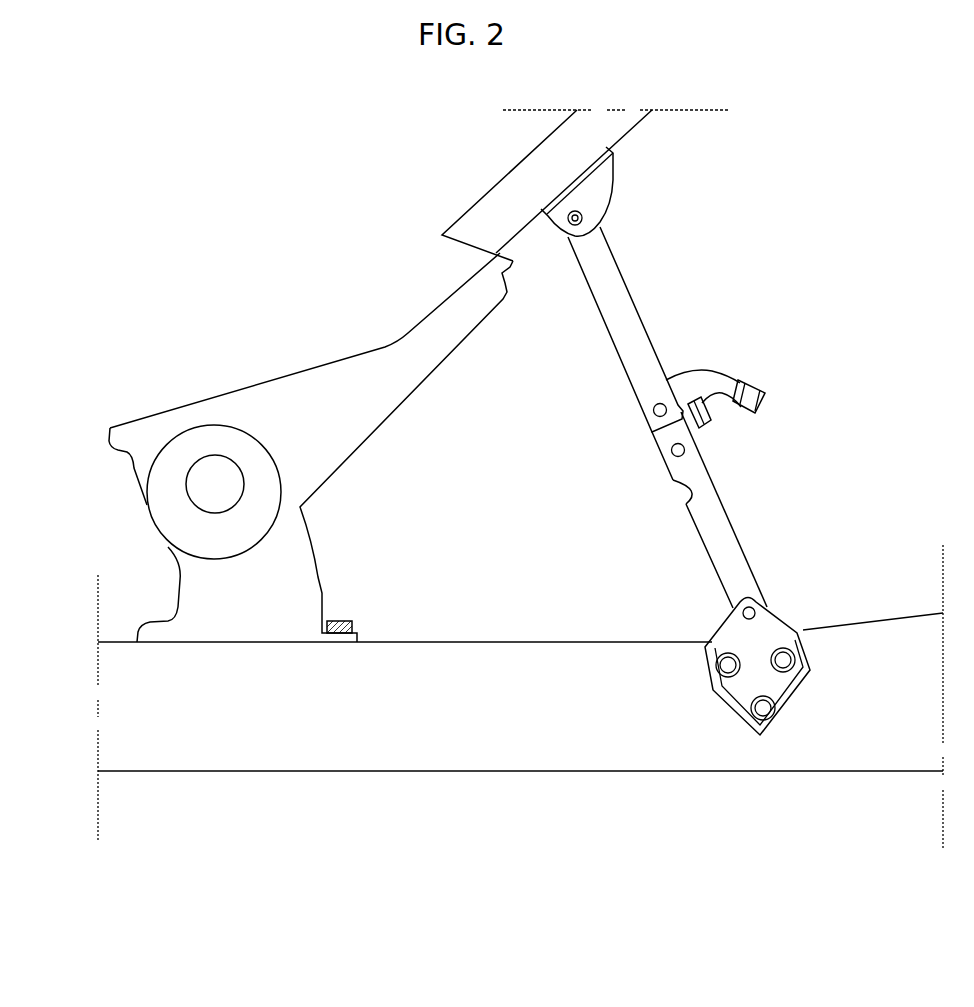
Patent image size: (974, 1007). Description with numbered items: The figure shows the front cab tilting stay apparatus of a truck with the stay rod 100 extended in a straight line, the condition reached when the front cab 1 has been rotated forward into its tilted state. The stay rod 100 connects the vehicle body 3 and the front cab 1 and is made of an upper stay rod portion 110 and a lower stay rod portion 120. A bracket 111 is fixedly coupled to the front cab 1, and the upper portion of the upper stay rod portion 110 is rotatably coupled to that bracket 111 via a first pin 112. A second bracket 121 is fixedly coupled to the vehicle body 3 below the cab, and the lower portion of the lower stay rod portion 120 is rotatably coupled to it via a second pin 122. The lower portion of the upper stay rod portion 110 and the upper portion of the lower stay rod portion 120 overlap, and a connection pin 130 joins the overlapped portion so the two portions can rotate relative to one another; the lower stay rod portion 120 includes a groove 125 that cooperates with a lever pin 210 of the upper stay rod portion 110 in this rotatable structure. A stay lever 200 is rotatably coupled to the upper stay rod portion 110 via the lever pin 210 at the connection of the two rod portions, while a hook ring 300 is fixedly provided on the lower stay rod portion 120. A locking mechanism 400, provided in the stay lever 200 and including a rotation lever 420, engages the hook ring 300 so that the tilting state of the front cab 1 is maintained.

The front cab 1 is at (523, 180).
The vehicle body 3 is at (328, 753).
The stay rod 100 is at (757, 568).
The upper stay rod portion 110 is at (622, 308).
The bracket 111 is at (598, 200).
The first pin 112 is at (586, 221).
The lower stay rod portion 120 is at (713, 510).
The bracket 121 is at (740, 690).
The second pin 122 is at (768, 607).
The groove 125 is at (682, 497).
The connection pin 130 is at (664, 458).
The stay lever 200 is at (725, 376).
The lever pin 210 is at (648, 413).
The hook ring 300 is at (702, 427).
The locking mechanism 400 is at (809, 390).
The rotation lever 420 is at (767, 411).